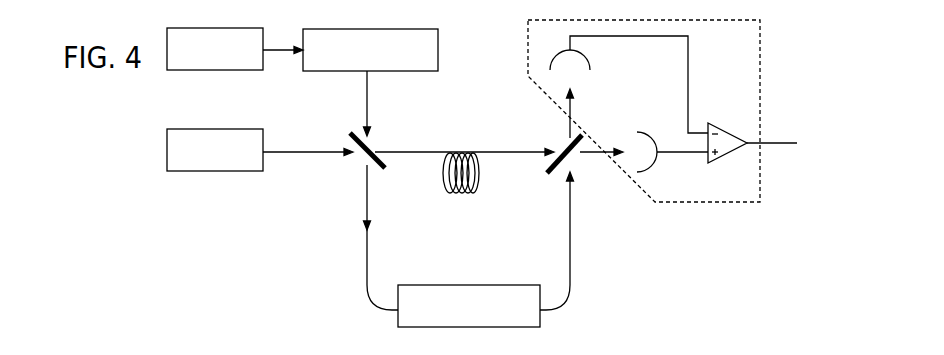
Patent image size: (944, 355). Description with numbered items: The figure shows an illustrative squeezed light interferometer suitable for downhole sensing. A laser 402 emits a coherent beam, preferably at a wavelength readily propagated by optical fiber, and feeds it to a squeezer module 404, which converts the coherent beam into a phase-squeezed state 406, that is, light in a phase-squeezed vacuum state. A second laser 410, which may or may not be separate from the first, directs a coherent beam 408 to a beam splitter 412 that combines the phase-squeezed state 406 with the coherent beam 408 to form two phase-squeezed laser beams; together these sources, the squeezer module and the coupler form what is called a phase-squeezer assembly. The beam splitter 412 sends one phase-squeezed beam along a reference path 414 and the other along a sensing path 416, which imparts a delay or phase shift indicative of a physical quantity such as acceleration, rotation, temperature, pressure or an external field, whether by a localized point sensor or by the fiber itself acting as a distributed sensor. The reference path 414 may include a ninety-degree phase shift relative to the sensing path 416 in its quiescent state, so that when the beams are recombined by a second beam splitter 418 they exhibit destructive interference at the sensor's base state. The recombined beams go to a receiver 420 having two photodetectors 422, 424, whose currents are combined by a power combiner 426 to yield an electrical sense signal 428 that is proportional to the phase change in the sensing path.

The laser 402 is at (202, 71).
The squeezer module 404 is at (403, 73).
The phase-squeezed state 406 is at (367, 99).
The coherent beam 408 is at (323, 157).
The laser 410 is at (203, 173).
The beam splitter 412 is at (384, 171).
The reference path 414 is at (463, 194).
The sensing path 416 is at (438, 329).
The beam splitter 418 is at (547, 171).
The receiver 420 is at (687, 202).
The photodetector 422 is at (587, 67).
The photodetector 424 is at (653, 163).
The 180° power combiner 426 is at (716, 156).
The sense signal 428 is at (780, 143).